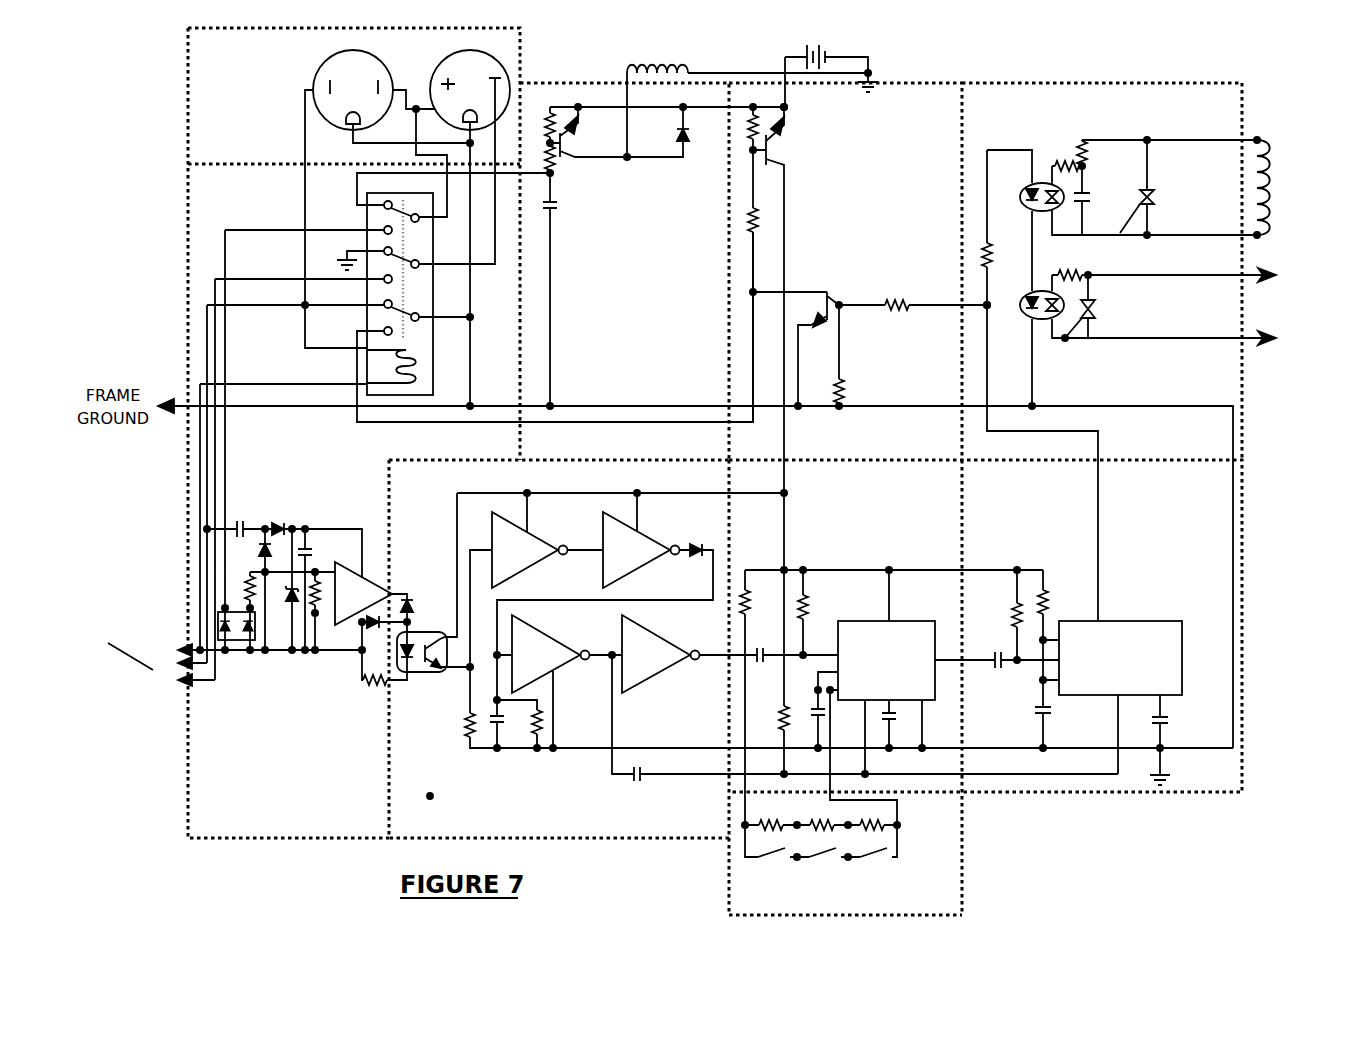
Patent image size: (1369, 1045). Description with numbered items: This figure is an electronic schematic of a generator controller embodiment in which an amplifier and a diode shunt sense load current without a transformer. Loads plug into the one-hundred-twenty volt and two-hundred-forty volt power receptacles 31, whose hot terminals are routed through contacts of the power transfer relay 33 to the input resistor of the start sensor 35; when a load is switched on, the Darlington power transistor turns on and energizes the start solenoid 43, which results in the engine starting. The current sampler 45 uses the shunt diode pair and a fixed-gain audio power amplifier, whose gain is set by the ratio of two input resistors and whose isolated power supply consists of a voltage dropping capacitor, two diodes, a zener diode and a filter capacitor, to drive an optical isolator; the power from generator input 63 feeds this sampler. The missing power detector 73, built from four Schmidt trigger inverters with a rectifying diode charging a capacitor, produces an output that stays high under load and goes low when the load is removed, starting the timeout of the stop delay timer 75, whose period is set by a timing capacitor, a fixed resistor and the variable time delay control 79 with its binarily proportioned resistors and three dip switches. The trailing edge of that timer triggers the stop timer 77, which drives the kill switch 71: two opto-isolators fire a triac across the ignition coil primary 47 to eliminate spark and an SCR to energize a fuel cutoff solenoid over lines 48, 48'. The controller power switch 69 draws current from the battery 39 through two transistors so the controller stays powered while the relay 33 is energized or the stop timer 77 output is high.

The power receptacle 31 is at (222, 80).
The relay 33 is at (438, 338).
The start sensor 35 is at (582, 98).
The battery 39 is at (800, 54).
The start solenoid 43 is at (620, 71).
The current sampler 45 is at (300, 483).
The coil primary 47 is at (1253, 170).
The line to fuel cutoff solenoid 48 is at (1182, 289).
The line to fuel cutoff solenoid 48' is at (1182, 353).
The power input from generator 63 is at (173, 686).
The controller power switch 69 is at (910, 97).
The kill switch 71 is at (1020, 98).
The missing power detector 73 is at (650, 478).
The stop delay timer 75 is at (890, 480).
The stop timer 77 is at (1197, 503).
The variable time delay control 79 is at (918, 823).